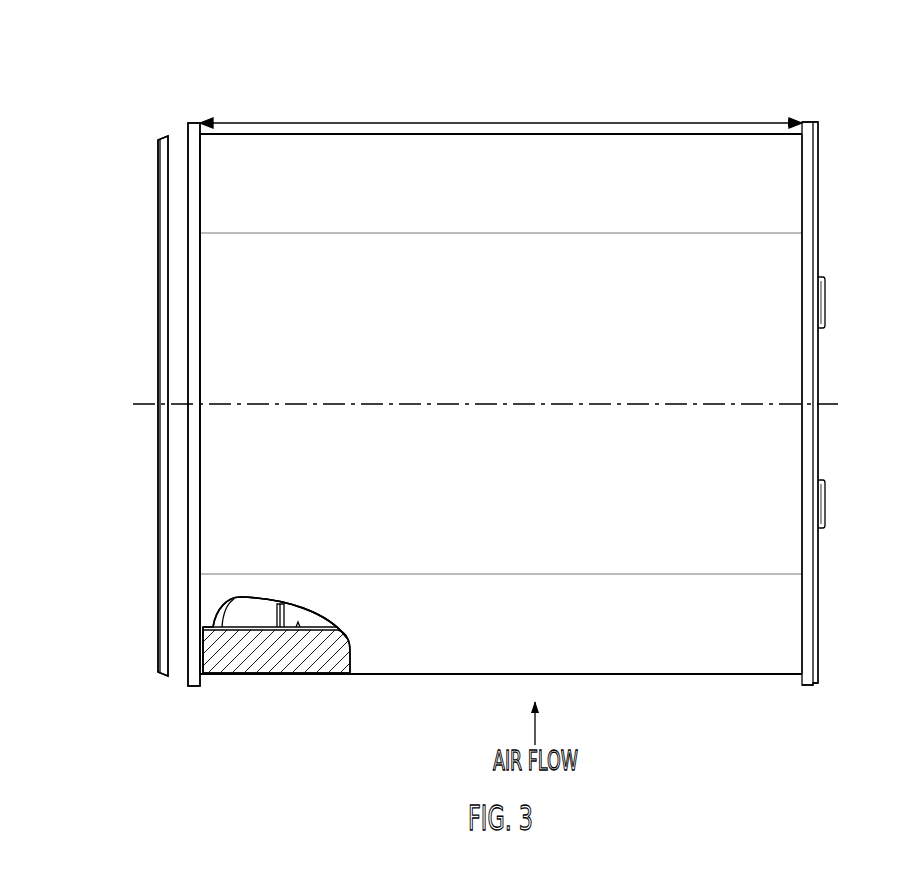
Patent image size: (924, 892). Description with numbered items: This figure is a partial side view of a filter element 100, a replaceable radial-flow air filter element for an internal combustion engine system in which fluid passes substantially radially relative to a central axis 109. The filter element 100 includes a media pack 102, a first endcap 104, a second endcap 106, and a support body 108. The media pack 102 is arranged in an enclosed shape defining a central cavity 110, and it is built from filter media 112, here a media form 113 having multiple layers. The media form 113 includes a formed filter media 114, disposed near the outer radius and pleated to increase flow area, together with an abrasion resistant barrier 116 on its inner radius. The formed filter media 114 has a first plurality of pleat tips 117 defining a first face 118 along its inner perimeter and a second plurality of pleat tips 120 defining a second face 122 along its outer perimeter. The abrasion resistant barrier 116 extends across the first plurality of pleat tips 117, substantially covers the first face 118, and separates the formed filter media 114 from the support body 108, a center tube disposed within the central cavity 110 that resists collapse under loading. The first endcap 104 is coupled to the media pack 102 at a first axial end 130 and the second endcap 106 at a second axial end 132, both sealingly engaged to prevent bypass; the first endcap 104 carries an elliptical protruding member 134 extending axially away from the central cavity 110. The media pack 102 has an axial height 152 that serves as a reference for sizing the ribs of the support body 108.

The filter element 100 is at (378, 82).
The media pack 102 is at (675, 706).
The first endcap 104 is at (166, 137).
The second endcap 106 is at (815, 121).
The support body 108 is at (273, 614).
The central axis 109 is at (530, 404).
The central cavity 110 is at (245, 602).
The filter media 112 is at (279, 655).
The media form 113 is at (720, 656).
The formed filter media 114 is at (328, 671).
The abrasion resistant barrier 116 is at (240, 630).
The first plurality of pleat tips 117 is at (327, 622).
The first face 118 is at (334, 624).
The second plurality of pleat tips 120 is at (312, 672).
The second face 122 is at (485, 676).
The first axial end 130 is at (108, 350).
The second axial end 132 is at (858, 390).
The elliptical protruding member 134 is at (178, 212).
The axial height 152 is at (513, 122).